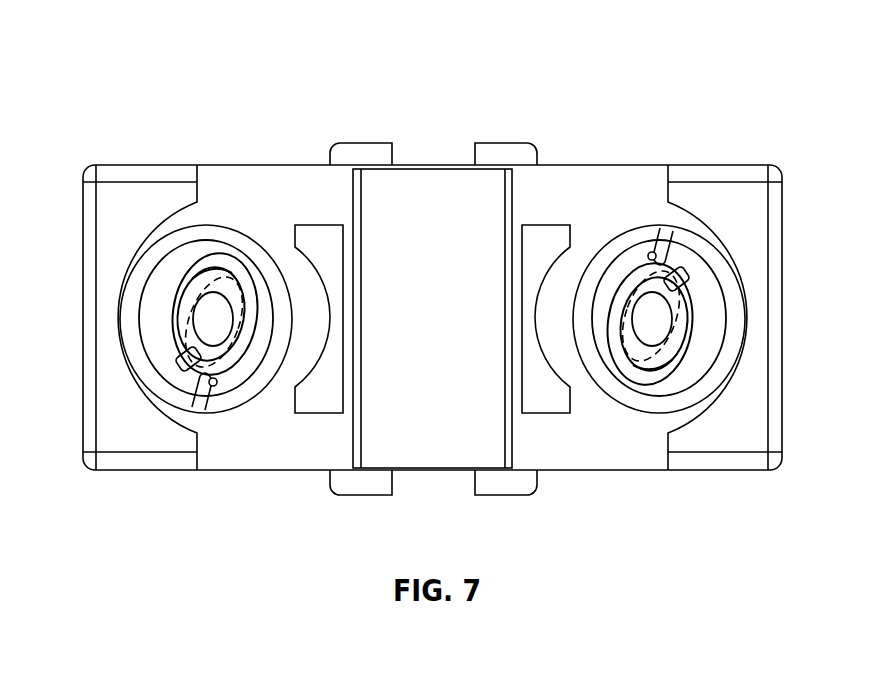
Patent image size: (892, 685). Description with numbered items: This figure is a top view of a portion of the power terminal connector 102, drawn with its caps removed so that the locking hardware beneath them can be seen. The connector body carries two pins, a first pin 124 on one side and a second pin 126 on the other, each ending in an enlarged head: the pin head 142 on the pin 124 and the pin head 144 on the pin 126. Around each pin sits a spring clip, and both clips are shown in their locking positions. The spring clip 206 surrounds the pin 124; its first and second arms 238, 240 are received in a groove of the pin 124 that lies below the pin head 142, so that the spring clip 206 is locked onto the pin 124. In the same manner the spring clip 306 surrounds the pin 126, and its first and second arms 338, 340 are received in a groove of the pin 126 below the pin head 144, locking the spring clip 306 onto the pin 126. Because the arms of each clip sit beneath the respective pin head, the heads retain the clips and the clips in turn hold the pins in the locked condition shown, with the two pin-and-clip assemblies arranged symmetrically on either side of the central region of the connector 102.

The power terminal connector 102 is at (330, 88).
The pin 124 is at (213, 307).
The pin 126 is at (650, 308).
The pin head 142 is at (186, 293).
The pin head 144 is at (699, 302).
The spring clip 206 is at (207, 265).
The spring clip 306 is at (647, 380).
The first arm 238 is at (252, 290).
The first arm 338 is at (641, 280).
The second arm 240 is at (177, 353).
The second arm 340 is at (697, 304).